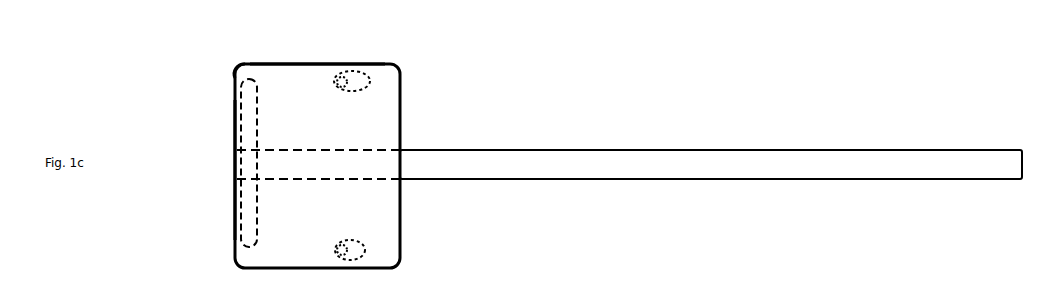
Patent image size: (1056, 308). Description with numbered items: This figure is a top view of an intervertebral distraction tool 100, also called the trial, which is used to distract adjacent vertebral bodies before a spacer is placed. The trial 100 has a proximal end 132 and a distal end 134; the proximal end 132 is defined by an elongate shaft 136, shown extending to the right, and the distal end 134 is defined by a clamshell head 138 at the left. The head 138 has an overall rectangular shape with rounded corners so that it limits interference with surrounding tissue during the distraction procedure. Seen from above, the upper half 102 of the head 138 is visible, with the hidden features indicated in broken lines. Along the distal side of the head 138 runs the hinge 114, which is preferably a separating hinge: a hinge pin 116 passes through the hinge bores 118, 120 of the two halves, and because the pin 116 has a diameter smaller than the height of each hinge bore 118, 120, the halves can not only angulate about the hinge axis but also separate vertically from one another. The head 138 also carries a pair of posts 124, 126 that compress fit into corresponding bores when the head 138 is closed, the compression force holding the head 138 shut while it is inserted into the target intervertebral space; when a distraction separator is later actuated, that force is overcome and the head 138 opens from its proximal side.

The intervertebral distraction tool 100 is at (614, 121).
The half 102 is at (389, 82).
The hinge 114 is at (238, 157).
The hinge pin 116 is at (240, 91).
The hinge bore 118 is at (241, 71).
The hinge bore 120 is at (353, 3).
The post 124 is at (344, 74).
The post 126 is at (361, 74).
The proximal end 132 is at (1014, 129).
The distal end 134 is at (231, 167).
The elongate shaft 136 is at (756, 147).
The clamshell head 138 is at (297, 54).